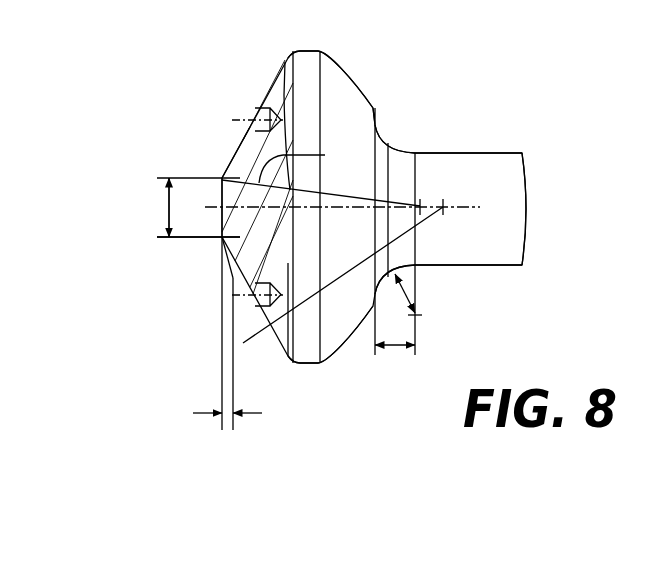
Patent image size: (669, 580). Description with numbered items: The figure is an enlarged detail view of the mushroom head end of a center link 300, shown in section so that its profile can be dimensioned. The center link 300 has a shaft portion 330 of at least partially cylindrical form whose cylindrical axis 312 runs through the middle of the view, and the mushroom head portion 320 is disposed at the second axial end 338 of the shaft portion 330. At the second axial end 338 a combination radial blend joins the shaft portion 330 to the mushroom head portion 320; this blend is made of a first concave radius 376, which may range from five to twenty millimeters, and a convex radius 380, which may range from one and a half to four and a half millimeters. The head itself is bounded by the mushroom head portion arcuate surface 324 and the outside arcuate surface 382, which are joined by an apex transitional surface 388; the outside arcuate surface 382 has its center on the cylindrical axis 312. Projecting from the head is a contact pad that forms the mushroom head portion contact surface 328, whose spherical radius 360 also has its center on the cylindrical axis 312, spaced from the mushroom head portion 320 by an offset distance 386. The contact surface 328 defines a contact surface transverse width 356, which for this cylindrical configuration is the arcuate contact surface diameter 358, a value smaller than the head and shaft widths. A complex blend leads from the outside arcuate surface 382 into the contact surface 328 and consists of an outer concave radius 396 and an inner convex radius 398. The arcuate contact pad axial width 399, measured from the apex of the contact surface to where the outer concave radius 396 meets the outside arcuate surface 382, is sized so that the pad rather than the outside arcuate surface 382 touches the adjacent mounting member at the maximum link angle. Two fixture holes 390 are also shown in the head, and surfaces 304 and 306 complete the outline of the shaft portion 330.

The center link 300 is at (371, 31).
The nose face 304 is at (218, 221).
The shank 306 is at (487, 137).
The cylindrical axis 312 is at (476, 208).
The mushroom head portion 320 is at (334, 57).
The mushroom head portion arcuate surface 324 is at (166, 201).
The mushroom head portion contact surface 328 is at (226, 177).
The shaft portion 330 is at (523, 176).
The second axial end 338 is at (379, 124).
The mushroom head portion contact surface transverse width 356 is at (167, 215).
The arcuate contact surface diameter 358 is at (160, 237).
The arcuate contact surface spherical radius 360 is at (325, 155).
The first concave radius 376 is at (420, 313).
The convex radius 380 is at (376, 108).
The outside arcuate surface 382 is at (262, 335).
The offset distance 386 is at (416, 341).
The apex transitional surface 388 is at (314, 363).
The fixture holes 390 is at (255, 107).
The outer concave radius 396 is at (231, 162).
The inner convex radius 398 is at (221, 241).
The arcuate contact pad axial width 399 is at (196, 413).